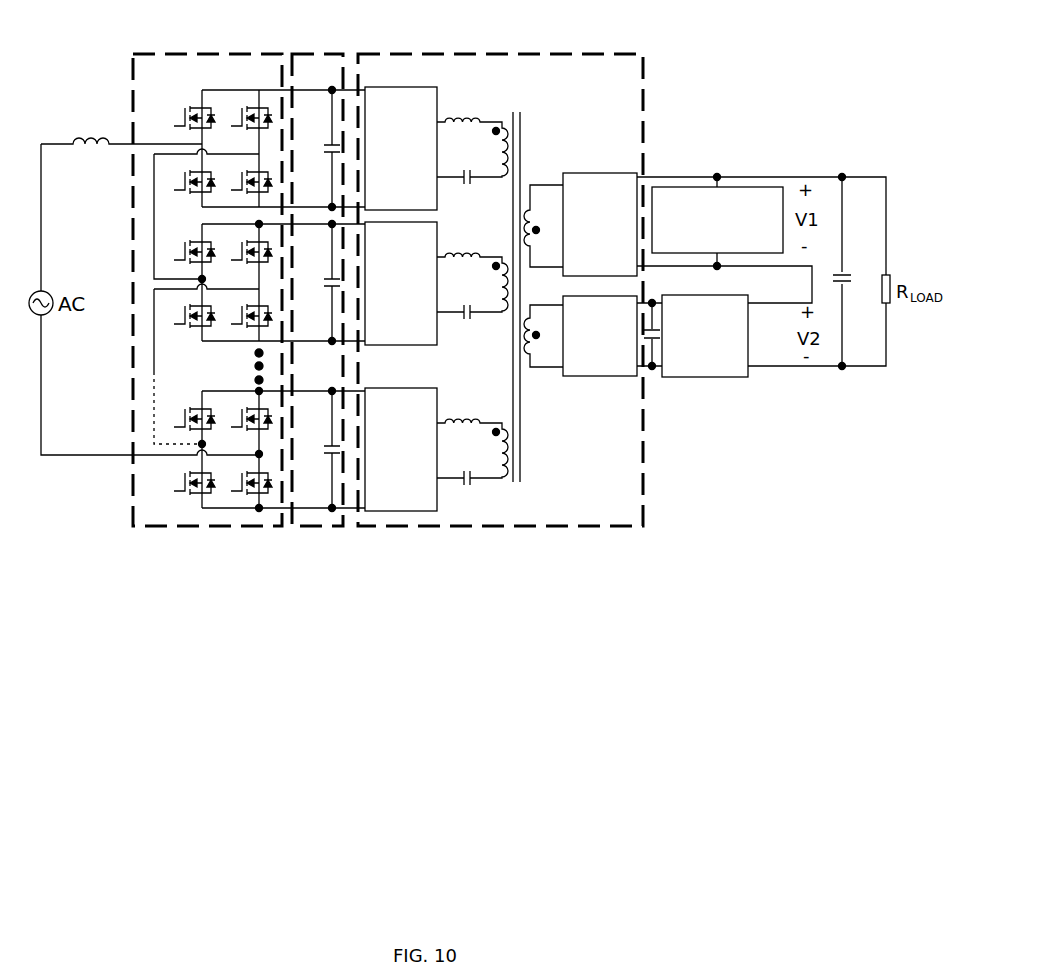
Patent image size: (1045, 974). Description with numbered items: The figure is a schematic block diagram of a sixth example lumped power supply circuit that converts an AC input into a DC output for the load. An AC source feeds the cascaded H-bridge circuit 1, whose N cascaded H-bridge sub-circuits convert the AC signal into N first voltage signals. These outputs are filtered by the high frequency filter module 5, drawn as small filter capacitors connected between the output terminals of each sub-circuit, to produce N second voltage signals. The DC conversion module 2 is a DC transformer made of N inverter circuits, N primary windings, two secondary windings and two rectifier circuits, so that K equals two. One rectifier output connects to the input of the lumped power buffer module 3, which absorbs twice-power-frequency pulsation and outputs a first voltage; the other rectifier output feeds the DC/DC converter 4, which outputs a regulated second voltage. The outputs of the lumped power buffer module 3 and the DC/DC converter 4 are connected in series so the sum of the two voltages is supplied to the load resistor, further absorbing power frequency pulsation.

The cascaded H-bridge circuit 1 is at (268, 54).
The DC conversion module 2 is at (575, 54).
The lumped power buffer module 3 is at (700, 187).
The DC/DC converter 4 is at (738, 377).
The high frequency filter module 5 is at (322, 54).